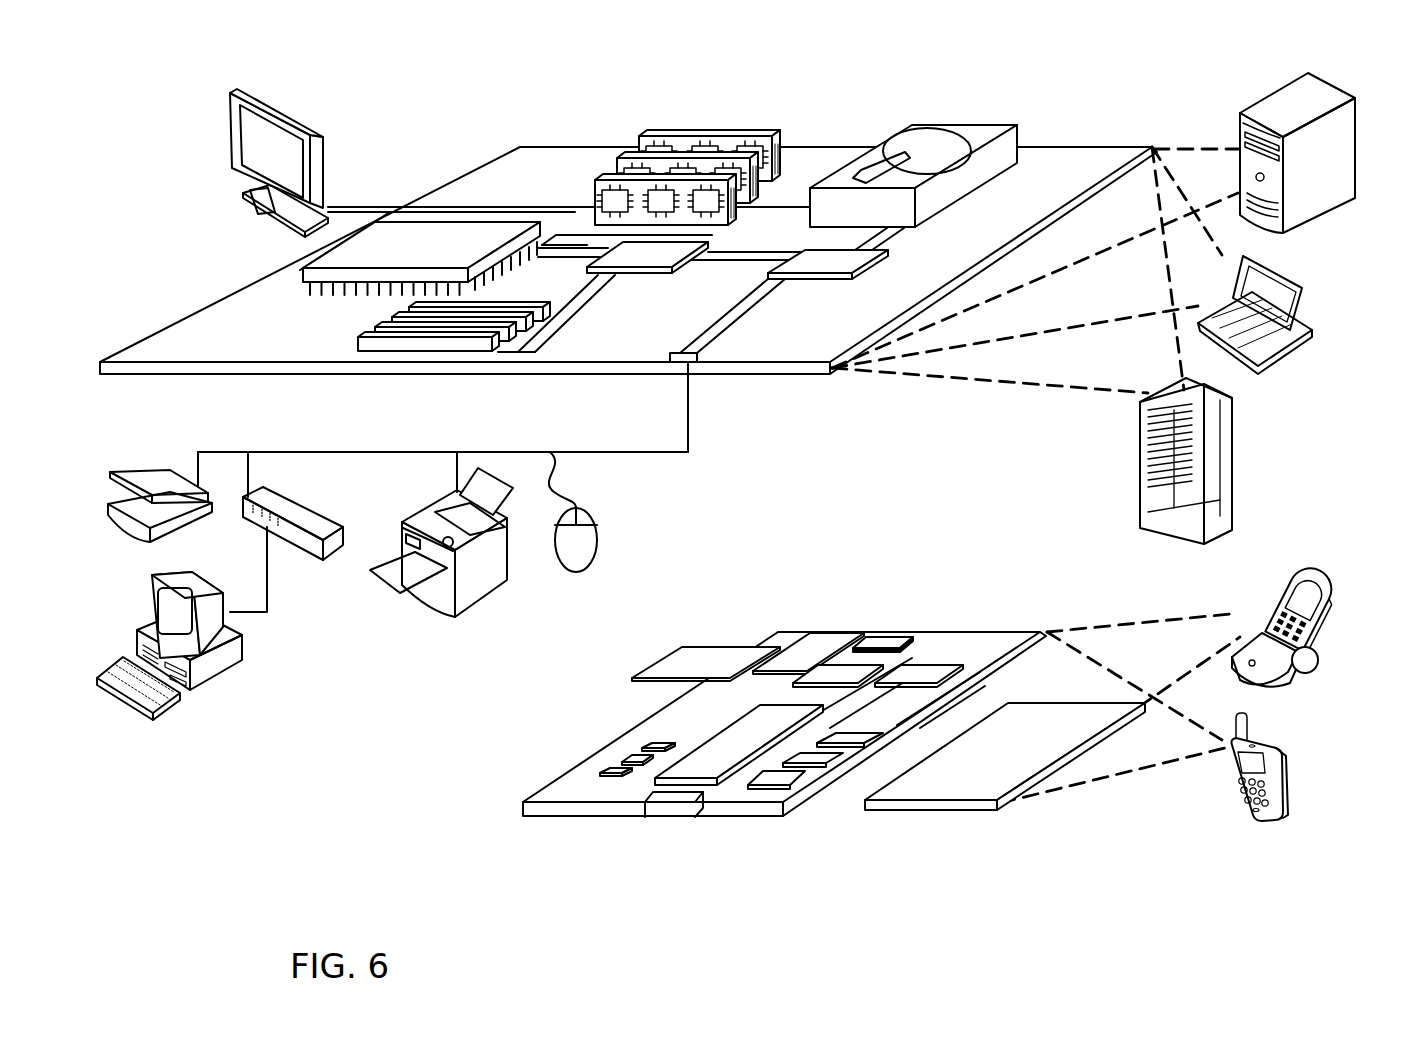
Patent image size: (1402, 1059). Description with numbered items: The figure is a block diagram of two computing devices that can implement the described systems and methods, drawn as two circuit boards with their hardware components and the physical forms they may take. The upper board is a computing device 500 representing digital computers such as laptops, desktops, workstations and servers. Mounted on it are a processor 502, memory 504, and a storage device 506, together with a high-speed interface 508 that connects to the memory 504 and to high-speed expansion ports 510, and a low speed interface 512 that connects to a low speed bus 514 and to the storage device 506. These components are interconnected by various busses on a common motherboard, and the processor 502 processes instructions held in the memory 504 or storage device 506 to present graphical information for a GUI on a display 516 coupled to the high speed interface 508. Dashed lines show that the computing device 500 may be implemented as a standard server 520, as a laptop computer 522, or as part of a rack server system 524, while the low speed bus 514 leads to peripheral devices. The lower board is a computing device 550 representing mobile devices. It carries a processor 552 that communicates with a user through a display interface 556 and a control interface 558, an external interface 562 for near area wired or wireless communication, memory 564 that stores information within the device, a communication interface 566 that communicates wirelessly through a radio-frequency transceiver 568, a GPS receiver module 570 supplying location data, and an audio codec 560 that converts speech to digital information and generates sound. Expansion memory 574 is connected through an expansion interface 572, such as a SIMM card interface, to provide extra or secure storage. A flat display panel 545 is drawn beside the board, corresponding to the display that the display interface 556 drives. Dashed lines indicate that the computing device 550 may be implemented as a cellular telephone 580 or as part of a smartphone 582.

The computing device 500 is at (442, 117).
The processor 502 is at (302, 270).
The memory 504 is at (650, 138).
The storage device 506 is at (910, 125).
The high-speed interface 508 is at (623, 253).
The high-speed expansion ports 510 is at (377, 329).
The low speed interface 512 is at (813, 257).
The low speed bus 514 is at (700, 363).
The display 516 is at (233, 94).
The standard server 520 is at (1240, 130).
The laptop computer 522 is at (1300, 290).
The rack server system 524 is at (1140, 494).
The display panel 545 is at (962, 788).
The computing device 550 is at (496, 814).
The processor 552 is at (712, 775).
The display interface 556 is at (790, 781).
The control interface 558 is at (822, 760).
The audio codec 560 is at (850, 740).
The external interface 562 is at (670, 810).
The memory 564 is at (622, 760).
The communication interface 566 is at (838, 675).
The transceiver 568 is at (913, 680).
The GPS receiver module 570 is at (887, 640).
The expansion interface 572 is at (765, 645).
The expansion memory 574 is at (682, 647).
The cellular telephone 580 is at (1283, 598).
The smartphone 582 is at (1228, 780).